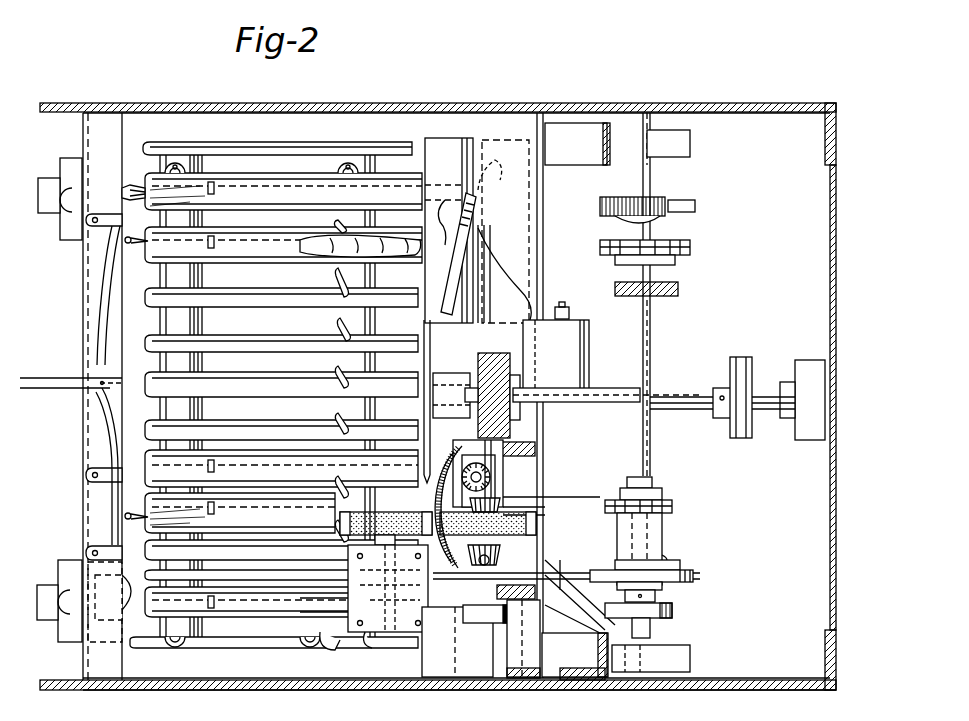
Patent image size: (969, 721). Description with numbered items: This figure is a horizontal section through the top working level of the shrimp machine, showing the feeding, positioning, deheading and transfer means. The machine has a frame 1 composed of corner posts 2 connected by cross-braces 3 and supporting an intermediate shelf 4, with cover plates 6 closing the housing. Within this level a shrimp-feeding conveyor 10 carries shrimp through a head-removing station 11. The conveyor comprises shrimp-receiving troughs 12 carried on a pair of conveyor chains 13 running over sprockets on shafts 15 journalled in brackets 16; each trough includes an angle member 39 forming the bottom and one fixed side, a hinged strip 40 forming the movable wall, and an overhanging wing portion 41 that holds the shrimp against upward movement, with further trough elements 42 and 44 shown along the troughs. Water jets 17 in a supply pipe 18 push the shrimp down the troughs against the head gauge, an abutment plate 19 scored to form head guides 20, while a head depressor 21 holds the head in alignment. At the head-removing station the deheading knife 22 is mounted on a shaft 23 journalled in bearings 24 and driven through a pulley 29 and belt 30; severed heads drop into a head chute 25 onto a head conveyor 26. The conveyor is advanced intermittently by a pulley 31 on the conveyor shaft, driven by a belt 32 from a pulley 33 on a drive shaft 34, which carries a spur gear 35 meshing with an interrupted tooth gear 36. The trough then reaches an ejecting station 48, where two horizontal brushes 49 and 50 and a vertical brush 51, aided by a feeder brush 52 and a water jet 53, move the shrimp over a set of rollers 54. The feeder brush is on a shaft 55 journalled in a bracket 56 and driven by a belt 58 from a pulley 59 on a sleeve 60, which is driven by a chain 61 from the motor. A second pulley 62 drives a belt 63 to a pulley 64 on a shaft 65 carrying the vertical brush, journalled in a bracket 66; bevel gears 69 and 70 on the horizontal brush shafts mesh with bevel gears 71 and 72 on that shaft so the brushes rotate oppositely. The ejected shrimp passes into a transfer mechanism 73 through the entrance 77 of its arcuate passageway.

The frame 1 is at (790, 100).
The corner posts 2 is at (812, 112).
The cross-braces 3 is at (122, 122).
The intermediate shelf 4 is at (761, 512).
The cover plates 6 is at (662, 691).
The shrimp-feeding conveyor 10 is at (362, 140).
The head-removing station 11 is at (505, 325).
The shrimp-receiving troughs 12 is at (282, 150).
The conveyor chains 13 is at (186, 648).
The shafts 15 is at (88, 574).
The brackets 16 is at (60, 210).
The water jets 17 is at (125, 240).
The supply pipe 18 is at (110, 280).
The abutment plate 19 is at (513, 160).
The head guides 20 is at (490, 280).
The head depressor 21 is at (466, 198).
The deheading knife 22 is at (432, 372).
The shaft 23 is at (680, 405).
The bearings 24 is at (512, 380).
The head chute 25 is at (540, 322).
The head conveyor 26 is at (37, 390).
The pulley 29 is at (754, 366).
The belt 30 is at (736, 360).
The pulley 31 is at (592, 640).
The belt 32 is at (678, 610).
The pulley 33 is at (660, 626).
The drive shaft 34 is at (650, 470).
The spur gear 35 is at (660, 198).
The interrupted tooth gear 36 is at (690, 205).
The angle member 39 is at (297, 178).
The strip 40 is at (178, 160).
The overhanging wing portion 41 is at (395, 180).
The pin 42 is at (338, 304).
The pin 44 is at (330, 355).
The ejecting station 48 is at (528, 498).
The horizontal brush 49 is at (440, 456).
The horizontal brush 50 is at (448, 604).
The vertical brush 51 is at (540, 524).
The feeder brush 52 is at (340, 521).
The water jet 53 is at (125, 516).
The rollers 54 is at (428, 502).
The shaft 55 is at (340, 606).
The bracket 56 is at (410, 650).
The belt 58 is at (610, 574).
The pulley 59 is at (693, 574).
The sleeve 60 is at (660, 532).
The chain 61 is at (672, 506).
The second pulley 62 is at (362, 640).
The belt 63 is at (462, 607).
The pulley 64 is at (505, 600).
The shaft 65 is at (492, 482).
The bracket 66 is at (520, 442).
The bevel gear 69 is at (488, 470).
The bevel gear 70 is at (415, 578).
The bevel gear 71 is at (500, 500).
The bevel gear 72 is at (500, 548).
The transfer mechanism 73 is at (592, 494).
The entrance 77 is at (540, 512).